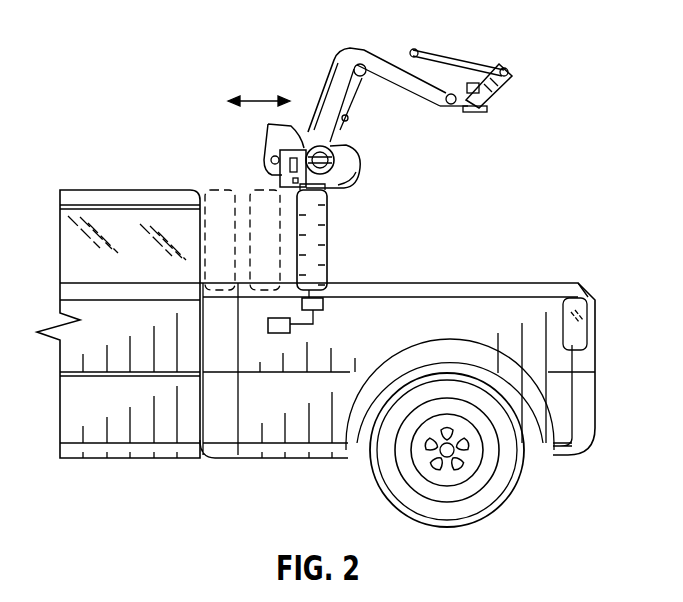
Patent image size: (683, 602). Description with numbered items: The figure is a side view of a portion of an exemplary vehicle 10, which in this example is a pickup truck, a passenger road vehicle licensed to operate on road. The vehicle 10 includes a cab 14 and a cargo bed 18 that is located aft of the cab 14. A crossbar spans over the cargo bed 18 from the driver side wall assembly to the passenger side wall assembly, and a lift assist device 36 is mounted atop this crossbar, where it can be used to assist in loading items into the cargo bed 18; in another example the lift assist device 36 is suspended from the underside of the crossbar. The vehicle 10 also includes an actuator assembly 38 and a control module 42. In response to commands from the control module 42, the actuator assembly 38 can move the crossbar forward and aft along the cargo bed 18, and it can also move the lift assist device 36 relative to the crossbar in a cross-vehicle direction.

The vehicle 10 is at (565, 140).
The cab 14 is at (108, 190).
The cargo bed 18 is at (520, 282).
The lift assist device 36 is at (381, 64).
The actuator assembly 38 is at (323, 302).
The control module 42 is at (283, 333).